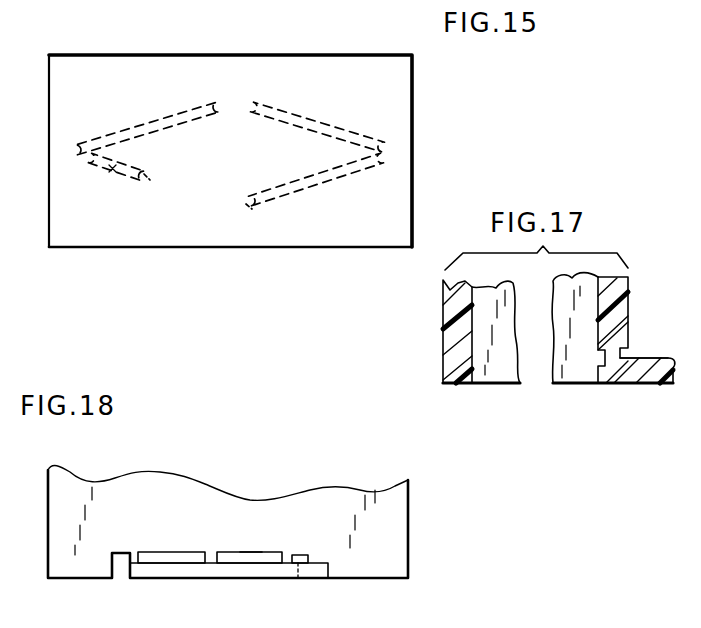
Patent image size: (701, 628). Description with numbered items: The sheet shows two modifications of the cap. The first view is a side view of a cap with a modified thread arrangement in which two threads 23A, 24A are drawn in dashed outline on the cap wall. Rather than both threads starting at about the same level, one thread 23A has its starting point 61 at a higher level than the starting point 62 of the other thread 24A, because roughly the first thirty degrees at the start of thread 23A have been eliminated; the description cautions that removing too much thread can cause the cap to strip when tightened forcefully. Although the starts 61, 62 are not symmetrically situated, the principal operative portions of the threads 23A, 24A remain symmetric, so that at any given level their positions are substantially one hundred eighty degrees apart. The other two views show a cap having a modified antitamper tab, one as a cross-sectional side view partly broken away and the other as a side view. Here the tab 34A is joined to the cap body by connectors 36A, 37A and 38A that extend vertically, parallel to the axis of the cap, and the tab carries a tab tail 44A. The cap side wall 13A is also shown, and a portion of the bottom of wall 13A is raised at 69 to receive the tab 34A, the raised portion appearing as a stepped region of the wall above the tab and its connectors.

In FIG. 18, the cap side wall 13A is at (384, 512).
In FIG. 15, the thread 23A is at (98, 175).
In FIG. 15, the thread 24A is at (392, 134).
In FIG. 17, the tab 34A is at (670, 357).
In FIG. 18, the tab 34A is at (230, 565).
In FIG. 18, the connector 36A is at (138, 552).
In FIG. 18, the connector 37A is at (207, 552).
In FIG. 18, the connector 38A is at (287, 552).
In FIG. 18, the tab tail 44A is at (330, 565).
In FIG. 15, the starting point of thread 61 is at (160, 173).
In FIG. 15, the starting point of thread 62 is at (246, 205).
In FIG. 18, the raised portion of wall bottom 69 is at (249, 553).